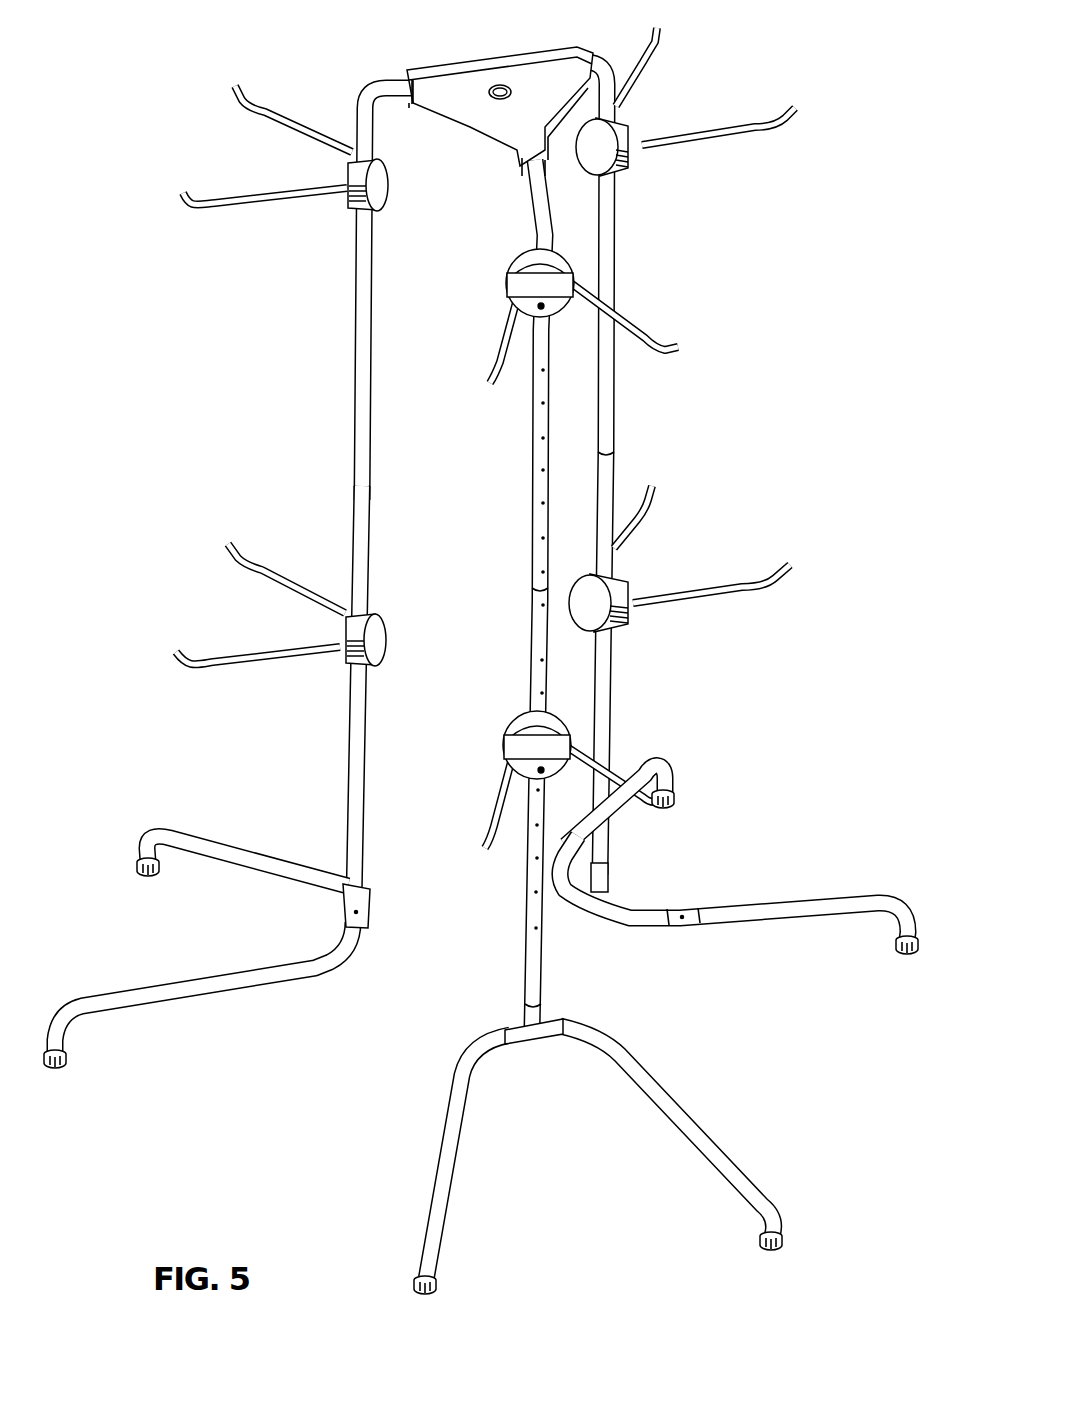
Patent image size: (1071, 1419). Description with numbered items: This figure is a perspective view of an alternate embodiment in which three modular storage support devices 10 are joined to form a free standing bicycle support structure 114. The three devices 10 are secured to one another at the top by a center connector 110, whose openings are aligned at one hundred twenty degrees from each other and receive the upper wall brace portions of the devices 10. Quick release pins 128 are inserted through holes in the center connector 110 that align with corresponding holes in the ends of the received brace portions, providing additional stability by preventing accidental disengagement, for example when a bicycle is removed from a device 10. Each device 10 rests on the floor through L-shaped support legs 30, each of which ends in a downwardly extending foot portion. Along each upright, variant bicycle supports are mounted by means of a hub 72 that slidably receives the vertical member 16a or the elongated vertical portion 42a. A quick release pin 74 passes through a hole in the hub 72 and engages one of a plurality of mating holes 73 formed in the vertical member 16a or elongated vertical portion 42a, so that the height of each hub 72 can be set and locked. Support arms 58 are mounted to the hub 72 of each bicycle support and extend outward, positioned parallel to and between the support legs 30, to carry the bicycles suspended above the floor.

The modular storage support device 10 is at (572, 451).
The vertical member 16a is at (534, 622).
The L-shaped support legs 30 is at (250, 856).
The elongated vertical portion 42a is at (535, 414).
The support arms 58 is at (633, 531).
The hub 72 is at (482, 768).
The mating holes 73 is at (543, 538).
The quick release pin 74 is at (704, 622).
The center connector 110 is at (548, 66).
The free standing bicycle support structure 114 is at (672, 102).
The quick release pins 128 is at (413, 100).